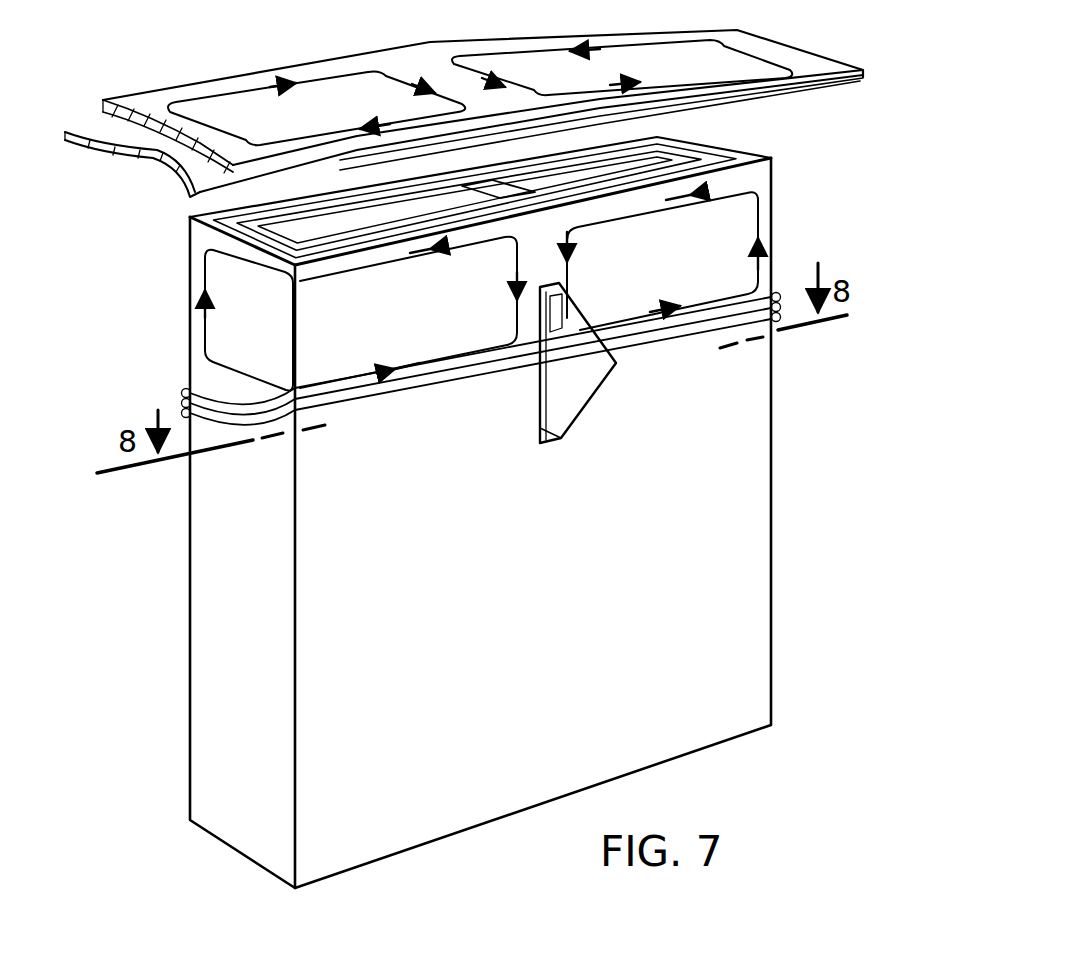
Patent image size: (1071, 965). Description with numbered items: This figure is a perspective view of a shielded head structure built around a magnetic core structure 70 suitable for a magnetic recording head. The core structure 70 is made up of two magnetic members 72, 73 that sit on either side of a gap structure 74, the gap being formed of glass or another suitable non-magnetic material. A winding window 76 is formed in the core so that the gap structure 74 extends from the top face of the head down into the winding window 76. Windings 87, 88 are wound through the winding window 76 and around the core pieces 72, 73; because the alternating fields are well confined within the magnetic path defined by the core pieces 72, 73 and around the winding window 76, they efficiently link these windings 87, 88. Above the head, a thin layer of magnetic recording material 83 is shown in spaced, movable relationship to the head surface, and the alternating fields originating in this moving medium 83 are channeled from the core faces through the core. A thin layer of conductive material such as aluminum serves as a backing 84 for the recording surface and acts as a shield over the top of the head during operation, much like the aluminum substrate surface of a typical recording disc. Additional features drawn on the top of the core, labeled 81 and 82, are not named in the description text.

The magnetic core structure 70 is at (495, 523).
The magnetic member 72 is at (212, 665).
The magnetic member 73 is at (750, 553).
The gap structure 74 is at (533, 190).
The winding window 76 is at (582, 412).
The top frame 81 is at (687, 143).
The seal 82 is at (247, 211).
The magnetic recording material 83 is at (172, 165).
The backing 84 is at (148, 102).
The winding 87 is at (188, 380).
The winding 88 is at (777, 298).